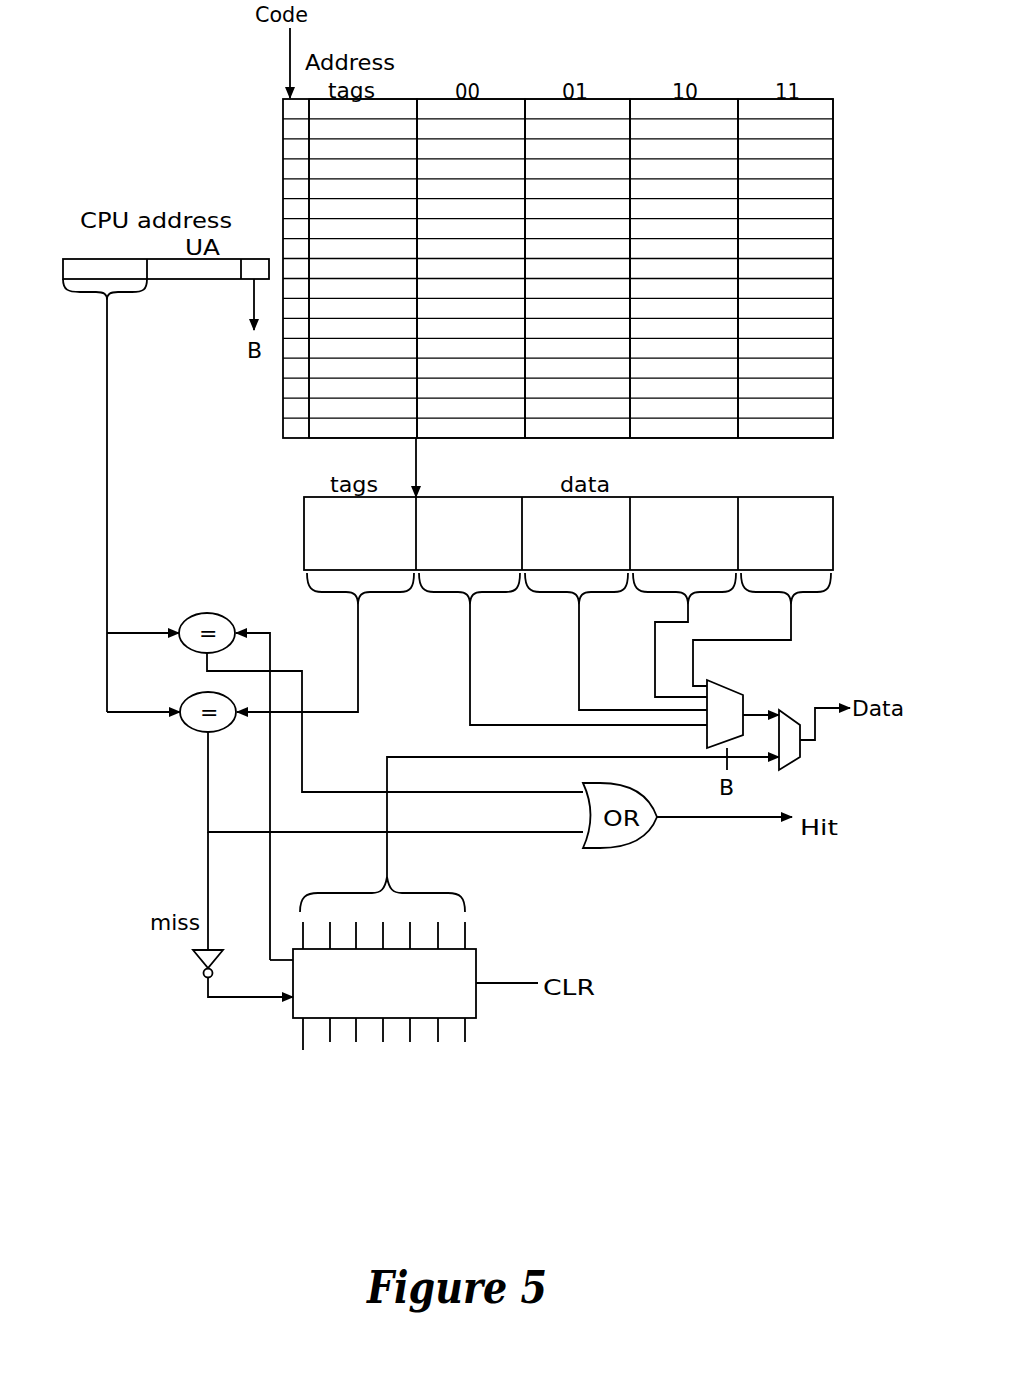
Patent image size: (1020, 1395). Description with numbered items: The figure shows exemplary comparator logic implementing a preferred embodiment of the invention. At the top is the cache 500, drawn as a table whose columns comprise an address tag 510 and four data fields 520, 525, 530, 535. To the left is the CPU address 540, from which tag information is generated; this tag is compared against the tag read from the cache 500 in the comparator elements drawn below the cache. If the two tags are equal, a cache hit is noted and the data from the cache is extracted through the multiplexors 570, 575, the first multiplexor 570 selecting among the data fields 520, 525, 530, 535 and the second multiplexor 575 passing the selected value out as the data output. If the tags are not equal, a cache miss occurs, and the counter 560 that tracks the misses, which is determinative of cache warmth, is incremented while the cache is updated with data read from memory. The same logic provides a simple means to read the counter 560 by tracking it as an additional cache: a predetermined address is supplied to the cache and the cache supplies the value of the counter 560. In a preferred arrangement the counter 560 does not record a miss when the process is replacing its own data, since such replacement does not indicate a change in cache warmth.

The cache 500 is at (832, 376).
The address tag 510 is at (392, 103).
The data 520 is at (494, 103).
The data 525 is at (596, 104).
The data 530 is at (706, 102).
The data 535 is at (803, 108).
The CPU address register 540 is at (66, 272).
The counter 560 is at (468, 975).
The multiplexor 570 is at (735, 718).
The multiplexor 575 is at (799, 725).